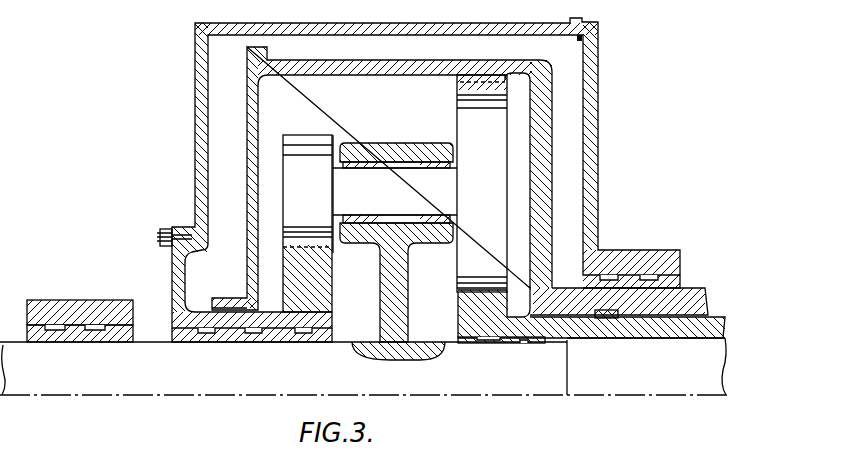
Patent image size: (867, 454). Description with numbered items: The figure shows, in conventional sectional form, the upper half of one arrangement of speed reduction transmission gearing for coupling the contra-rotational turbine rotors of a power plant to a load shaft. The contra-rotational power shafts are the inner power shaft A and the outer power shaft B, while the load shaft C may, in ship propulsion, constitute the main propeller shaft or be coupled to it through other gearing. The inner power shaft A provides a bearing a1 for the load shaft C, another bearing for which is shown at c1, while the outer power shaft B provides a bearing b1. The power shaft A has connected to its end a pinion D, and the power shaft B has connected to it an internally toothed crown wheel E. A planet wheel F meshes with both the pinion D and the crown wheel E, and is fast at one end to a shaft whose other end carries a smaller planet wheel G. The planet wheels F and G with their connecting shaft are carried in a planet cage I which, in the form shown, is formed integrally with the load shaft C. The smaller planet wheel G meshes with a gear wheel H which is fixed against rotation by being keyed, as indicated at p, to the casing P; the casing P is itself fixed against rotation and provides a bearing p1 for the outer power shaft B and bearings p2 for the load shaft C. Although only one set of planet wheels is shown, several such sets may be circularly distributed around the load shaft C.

The casing P is at (441, 198).
The crown wheel E is at (503, 84).
The planet wheel F is at (463, 124).
The planet wheel G is at (291, 163).
The gear wheel H is at (335, 247).
The planet cage I is at (398, 282).
The load shaft C is at (468, 380).
The pinion D is at (461, 295).
The inner power shaft A is at (724, 327).
The outer power shaft B is at (705, 300).
The key p is at (333, 305).
The bearing p1 is at (678, 283).
The bearings p2 is at (289, 342).
The bearing c1 is at (116, 343).
The bearing a1 is at (500, 343).
The bearing b1 is at (604, 318).